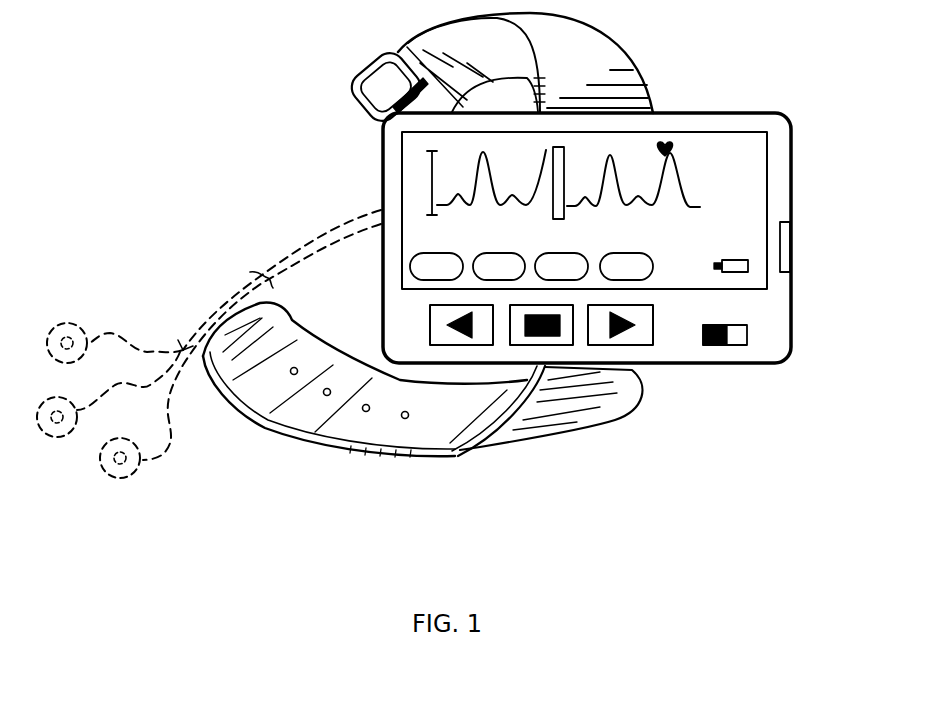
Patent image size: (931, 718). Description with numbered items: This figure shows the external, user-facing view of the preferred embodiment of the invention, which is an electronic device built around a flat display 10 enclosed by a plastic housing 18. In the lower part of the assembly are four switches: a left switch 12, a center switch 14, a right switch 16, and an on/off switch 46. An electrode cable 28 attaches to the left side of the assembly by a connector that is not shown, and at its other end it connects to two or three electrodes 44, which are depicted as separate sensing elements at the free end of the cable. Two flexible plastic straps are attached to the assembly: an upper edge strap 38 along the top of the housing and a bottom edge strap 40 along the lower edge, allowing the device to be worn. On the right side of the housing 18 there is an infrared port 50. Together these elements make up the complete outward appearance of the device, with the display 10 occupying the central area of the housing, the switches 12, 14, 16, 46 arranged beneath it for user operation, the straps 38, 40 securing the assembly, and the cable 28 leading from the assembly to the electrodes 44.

The flat display 10 is at (748, 213).
The left switch 12 is at (430, 320).
The center switch 14 is at (543, 345).
The right switch 16 is at (628, 345).
The plastic housing 18 is at (723, 112).
The electrode cable 28 is at (291, 262).
The upper edge strap 38 is at (640, 53).
The bottom edge strap 40 is at (567, 430).
The electrodes 44 is at (113, 480).
The on/off switch 46 is at (720, 345).
The infrared port 50 is at (790, 257).